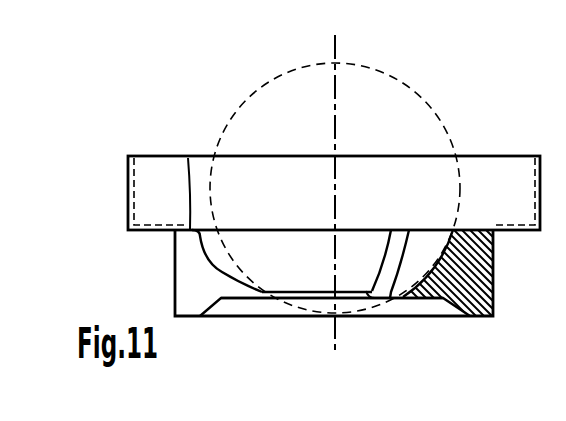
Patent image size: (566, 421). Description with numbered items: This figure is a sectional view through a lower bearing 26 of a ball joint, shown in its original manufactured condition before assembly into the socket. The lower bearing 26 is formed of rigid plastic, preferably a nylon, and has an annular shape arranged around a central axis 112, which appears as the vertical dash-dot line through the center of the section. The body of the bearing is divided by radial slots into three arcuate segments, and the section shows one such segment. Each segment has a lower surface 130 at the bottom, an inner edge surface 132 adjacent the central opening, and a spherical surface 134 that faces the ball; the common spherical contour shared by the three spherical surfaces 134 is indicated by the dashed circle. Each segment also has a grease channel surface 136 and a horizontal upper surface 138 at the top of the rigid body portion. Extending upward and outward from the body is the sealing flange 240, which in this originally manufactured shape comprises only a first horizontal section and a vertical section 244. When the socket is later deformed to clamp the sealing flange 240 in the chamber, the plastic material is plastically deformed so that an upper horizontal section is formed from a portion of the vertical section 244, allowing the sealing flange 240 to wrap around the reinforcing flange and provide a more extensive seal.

The central axis 112 is at (336, 87).
The sealing flange 240 is at (132, 157).
The vertical section 244 is at (128, 194).
The horizontal upper surface 138 is at (188, 158).
The lower bearing 26 is at (176, 274).
The grease channel surface 136 is at (238, 229).
The spherical surface 134 is at (283, 257).
The lower surface 130 is at (232, 305).
The inner edge surface 132 is at (305, 294).